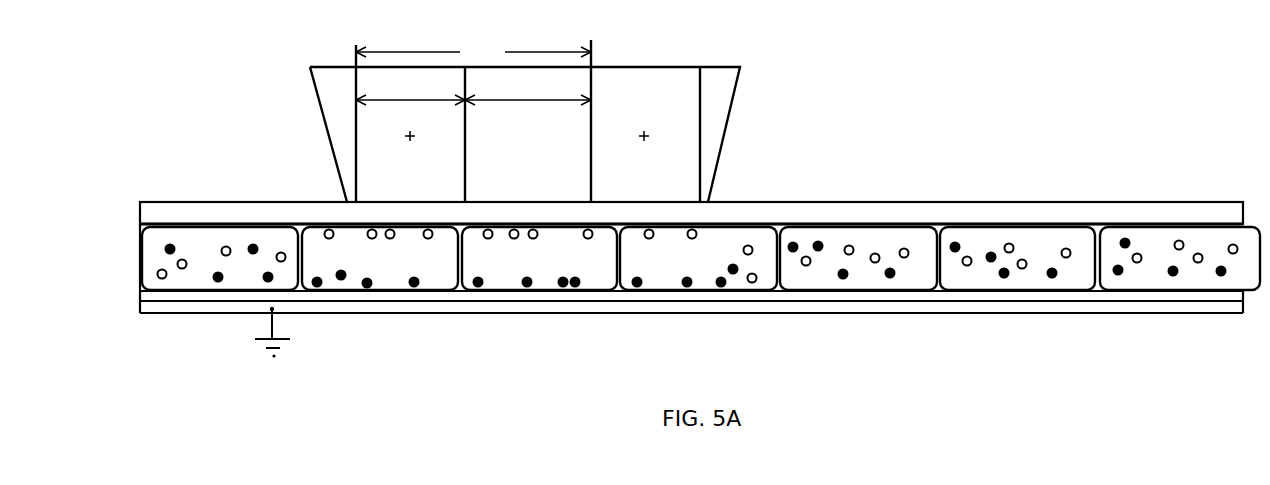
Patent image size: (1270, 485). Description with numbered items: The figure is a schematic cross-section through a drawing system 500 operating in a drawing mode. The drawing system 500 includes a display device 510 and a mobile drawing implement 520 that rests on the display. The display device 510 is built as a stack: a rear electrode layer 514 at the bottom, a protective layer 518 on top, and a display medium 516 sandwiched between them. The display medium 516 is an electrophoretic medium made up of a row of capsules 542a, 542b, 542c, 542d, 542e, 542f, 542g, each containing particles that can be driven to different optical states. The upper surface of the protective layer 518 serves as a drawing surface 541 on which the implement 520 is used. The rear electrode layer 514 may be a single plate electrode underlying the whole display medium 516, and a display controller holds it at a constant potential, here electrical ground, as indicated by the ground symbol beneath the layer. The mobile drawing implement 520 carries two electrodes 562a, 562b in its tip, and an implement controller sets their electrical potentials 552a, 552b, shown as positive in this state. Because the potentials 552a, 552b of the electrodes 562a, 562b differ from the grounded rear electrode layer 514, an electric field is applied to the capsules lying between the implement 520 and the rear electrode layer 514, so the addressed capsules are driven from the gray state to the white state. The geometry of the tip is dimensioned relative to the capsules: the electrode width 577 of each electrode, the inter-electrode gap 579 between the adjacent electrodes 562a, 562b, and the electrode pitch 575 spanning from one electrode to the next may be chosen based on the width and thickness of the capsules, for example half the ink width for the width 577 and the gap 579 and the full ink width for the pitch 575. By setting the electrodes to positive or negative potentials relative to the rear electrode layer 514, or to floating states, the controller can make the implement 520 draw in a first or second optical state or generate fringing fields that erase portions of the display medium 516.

The drawing system 500 is at (931, 77).
The display device 510 is at (895, 170).
The rear electrode layer 514 is at (126, 291).
The display medium 516 is at (126, 231).
The protective layer 518 is at (1177, 212).
The mobile drawing implement 520 is at (740, 67).
The drawing surface 541 is at (1068, 200).
The capsule 542a is at (198, 275).
The capsule 542b is at (391, 275).
The capsule 542c is at (508, 275).
The capsule 542d is at (665, 275).
The capsule 542e is at (820, 275).
The capsule 542f is at (977, 275).
The capsule 542g is at (1140, 275).
The electrical potential 552a is at (400, 132).
The electrical potential 552b is at (655, 138).
The electrode 562a is at (412, 187).
The electrode 562b is at (646, 183).
The electrode pitch 575 is at (473, 51).
The electrode width 577 is at (410, 91).
The inter-electrode gap 579 is at (528, 91).